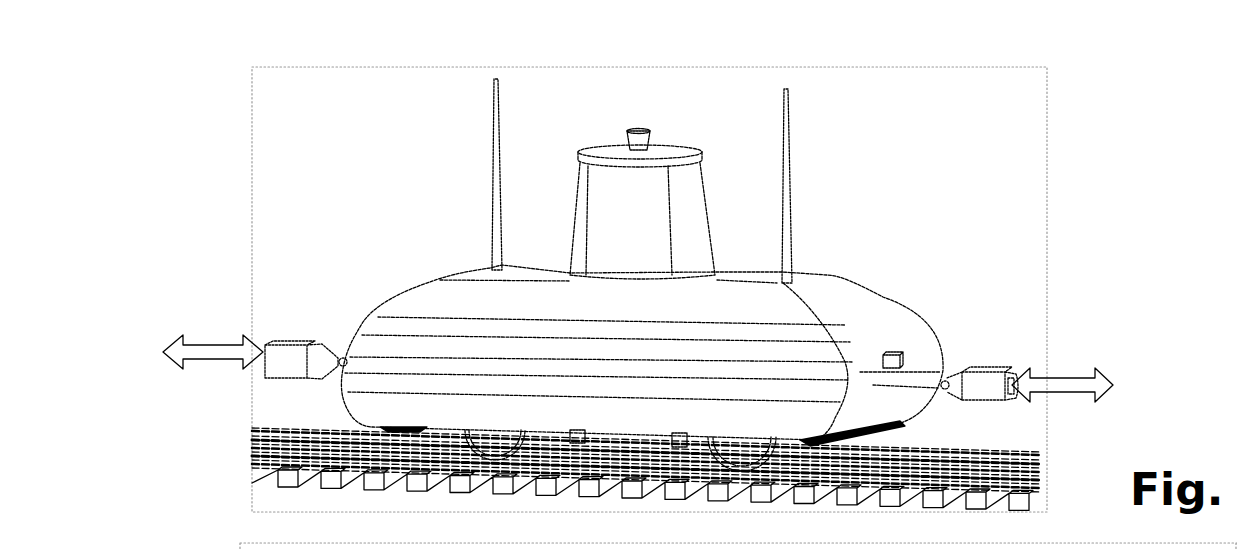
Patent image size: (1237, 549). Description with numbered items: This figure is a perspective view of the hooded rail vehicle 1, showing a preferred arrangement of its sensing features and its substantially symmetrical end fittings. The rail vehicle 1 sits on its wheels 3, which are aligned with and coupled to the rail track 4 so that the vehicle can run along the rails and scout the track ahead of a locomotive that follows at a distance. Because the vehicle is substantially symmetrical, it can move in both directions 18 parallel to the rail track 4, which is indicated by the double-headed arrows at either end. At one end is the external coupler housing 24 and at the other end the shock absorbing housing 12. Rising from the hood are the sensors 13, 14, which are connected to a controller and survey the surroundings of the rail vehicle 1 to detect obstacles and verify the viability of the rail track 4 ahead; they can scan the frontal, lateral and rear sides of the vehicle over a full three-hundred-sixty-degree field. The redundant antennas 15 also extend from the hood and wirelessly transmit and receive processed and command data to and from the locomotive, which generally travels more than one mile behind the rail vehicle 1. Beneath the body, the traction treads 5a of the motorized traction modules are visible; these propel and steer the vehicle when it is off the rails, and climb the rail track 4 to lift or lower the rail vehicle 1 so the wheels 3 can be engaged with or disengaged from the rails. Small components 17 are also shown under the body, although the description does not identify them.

The rail vehicle 1 is at (243, 192).
The wheels 3 is at (487, 442).
The rail track 4 is at (257, 447).
The traction treads 5a is at (900, 423).
The shock absorbing housing 12 is at (923, 382).
The sensor 13 is at (888, 353).
The sensor 14 is at (650, 135).
The redundant antennas 15 is at (786, 135).
The rail sensors 17 is at (668, 452).
The directions 18 is at (1063, 375).
The external coupler housing 24 is at (298, 345).